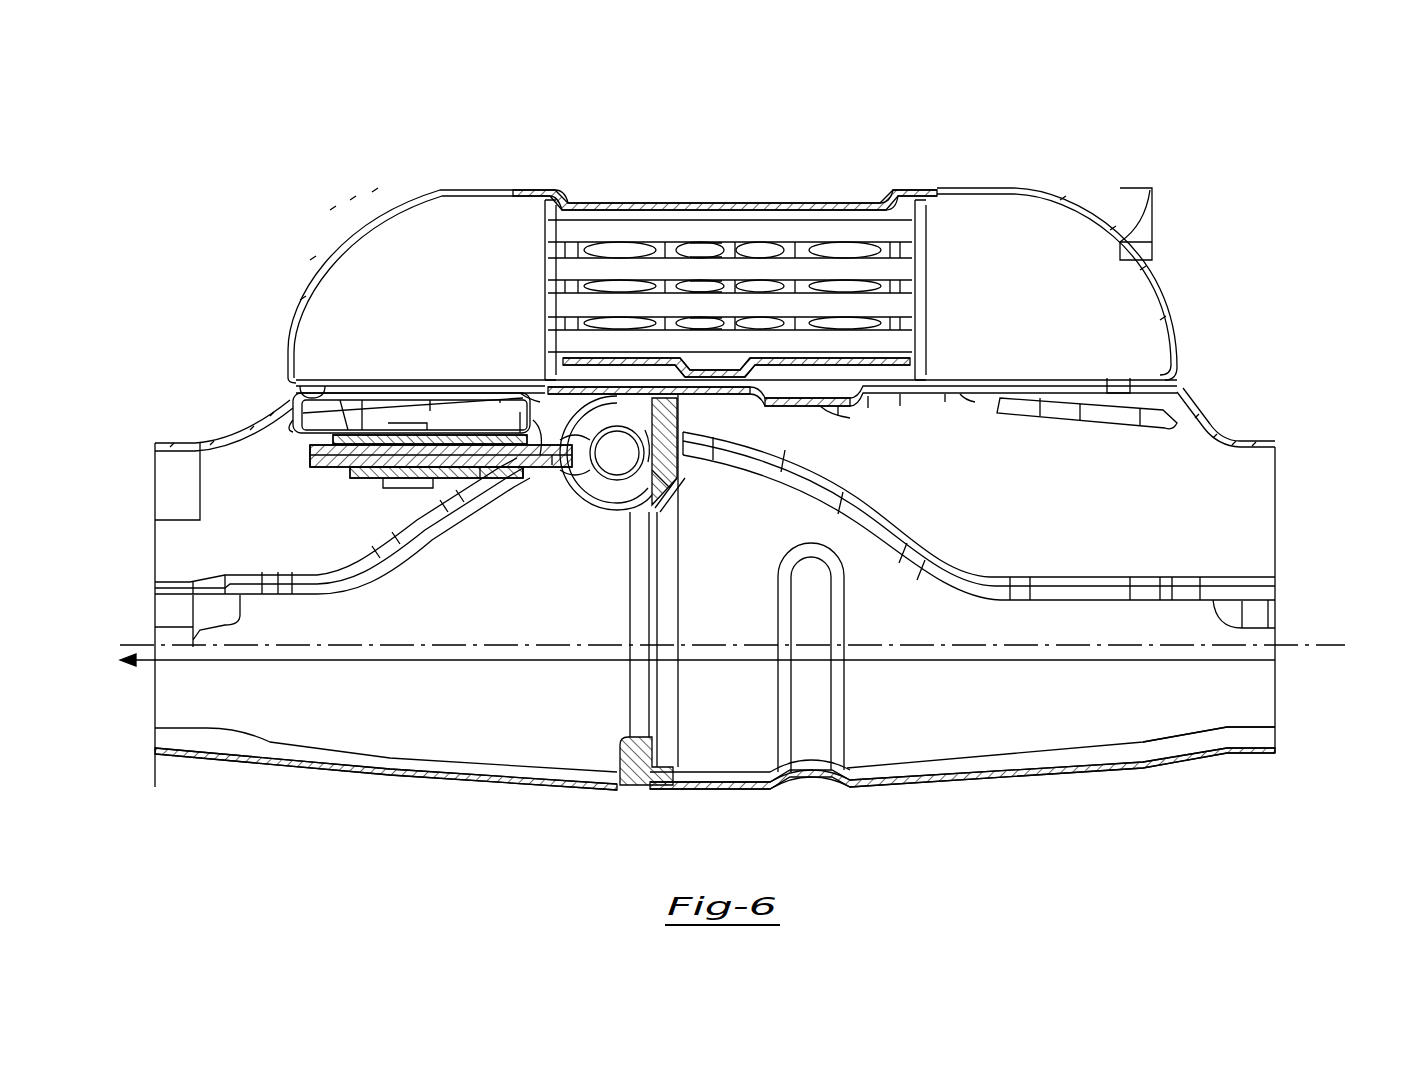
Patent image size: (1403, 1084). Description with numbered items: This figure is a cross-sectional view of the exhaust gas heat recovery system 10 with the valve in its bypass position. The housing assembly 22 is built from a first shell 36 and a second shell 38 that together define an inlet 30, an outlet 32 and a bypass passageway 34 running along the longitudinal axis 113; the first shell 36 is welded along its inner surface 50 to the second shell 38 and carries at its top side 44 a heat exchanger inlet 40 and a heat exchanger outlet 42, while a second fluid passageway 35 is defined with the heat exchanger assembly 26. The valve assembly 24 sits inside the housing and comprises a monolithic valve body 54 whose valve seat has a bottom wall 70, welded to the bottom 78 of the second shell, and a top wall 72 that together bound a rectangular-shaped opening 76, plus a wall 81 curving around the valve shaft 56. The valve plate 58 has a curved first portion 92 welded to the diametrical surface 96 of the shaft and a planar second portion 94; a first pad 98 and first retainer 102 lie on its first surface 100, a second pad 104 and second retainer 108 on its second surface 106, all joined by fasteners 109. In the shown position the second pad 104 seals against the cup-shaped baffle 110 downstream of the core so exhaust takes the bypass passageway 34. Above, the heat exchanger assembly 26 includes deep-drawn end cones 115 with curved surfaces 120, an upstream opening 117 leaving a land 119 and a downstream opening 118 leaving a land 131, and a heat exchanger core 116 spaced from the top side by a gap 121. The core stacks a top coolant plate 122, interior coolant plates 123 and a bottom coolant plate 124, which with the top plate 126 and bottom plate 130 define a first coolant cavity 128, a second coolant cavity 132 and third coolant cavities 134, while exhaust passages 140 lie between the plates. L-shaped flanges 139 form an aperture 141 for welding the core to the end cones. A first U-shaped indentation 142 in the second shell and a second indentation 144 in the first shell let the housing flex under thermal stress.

The exhaust gas heat recovery system 10 is at (1170, 98).
The housing assembly 22 is at (1235, 410).
The valve assembly 24 is at (700, 445).
The heat exchanger assembly 26 is at (1190, 240).
The inlet 30 is at (1250, 693).
The outlet 32 is at (165, 675).
The bypass passageway 34 is at (300, 741).
The second fluid passageway 35 is at (1160, 345).
The first shell 36 is at (1198, 430).
The second shell 38 is at (1253, 755).
The heat exchanger inlet 40 is at (1130, 398).
The heat exchanger outlet 42 is at (368, 392).
The top side 44 is at (905, 405).
The inner surface 50 is at (285, 455).
The valve body 54 is at (668, 505).
The valve shaft 56 is at (617, 462).
The valve plate 58 is at (286, 456).
The bottom wall 70 is at (638, 785).
The top wall 72 is at (683, 403).
The rectangular-shaped opening 76 is at (628, 703).
The bottom 78 is at (735, 787).
The wall 81 is at (657, 480).
The first portion 92 is at (655, 462).
The second portion 94 is at (322, 455).
The diametrical surface 96 is at (600, 475).
The first pad 98 is at (527, 470).
The first surface 100 is at (560, 475).
The first retainer 102 is at (493, 472).
The second pad 104 is at (280, 415).
The second surface 106 is at (533, 453).
The second retainer 108 is at (368, 472).
The fasteners 109 is at (398, 492).
The baffle 110 is at (298, 428).
The longitudinal axis 113 is at (300, 412).
The end cones 115 is at (368, 195).
The heat exchanger core 116 is at (733, 240).
The opening 117 is at (1078, 397).
The opening 118 is at (362, 382).
The land 119 is at (1108, 385).
The curved surface 120 is at (1148, 190).
The gap 121 is at (838, 410).
The top coolant plate 122 is at (855, 215).
The interior coolant plates 123 is at (917, 250).
The bottom coolant plate 124 is at (920, 352).
The top plate 126 is at (822, 210).
The first coolant cavity 128 is at (615, 213).
The bottom plate 130 is at (868, 408).
The land 131 is at (320, 395).
The second coolant cavity 132 is at (587, 360).
The third coolant cavities 134 is at (550, 290).
The L-shaped flanges 139 is at (975, 400).
The passages 140 is at (702, 343).
The aperture 141 is at (945, 400).
The first U-shaped indentation 142 is at (813, 748).
The second indentation 144 is at (827, 420).